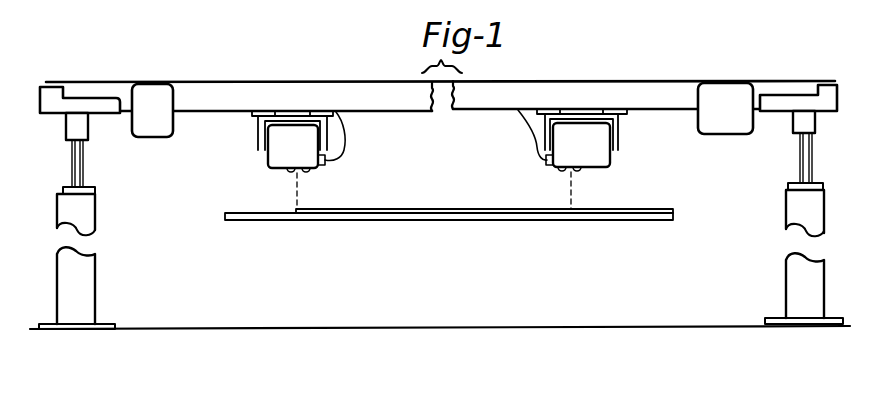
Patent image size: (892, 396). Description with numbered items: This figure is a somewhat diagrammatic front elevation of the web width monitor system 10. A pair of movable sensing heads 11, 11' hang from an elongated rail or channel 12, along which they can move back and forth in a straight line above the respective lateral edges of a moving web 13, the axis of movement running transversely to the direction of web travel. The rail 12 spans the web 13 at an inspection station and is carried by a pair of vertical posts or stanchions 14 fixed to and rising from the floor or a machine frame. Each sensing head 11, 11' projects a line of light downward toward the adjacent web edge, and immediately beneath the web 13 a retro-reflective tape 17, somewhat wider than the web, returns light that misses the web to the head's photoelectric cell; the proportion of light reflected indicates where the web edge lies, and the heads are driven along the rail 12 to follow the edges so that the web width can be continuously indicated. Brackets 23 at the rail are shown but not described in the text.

The web width monitor system 10 is at (595, 61).
The sensing head 11 is at (274, 160).
The sensing head 11' is at (598, 159).
The rail 12 is at (234, 84).
The web 13 is at (363, 209).
The vertical posts 14 is at (97, 213).
The retro-reflective tape 17 is at (265, 221).
The sliding clamp bracket 23 is at (157, 119).